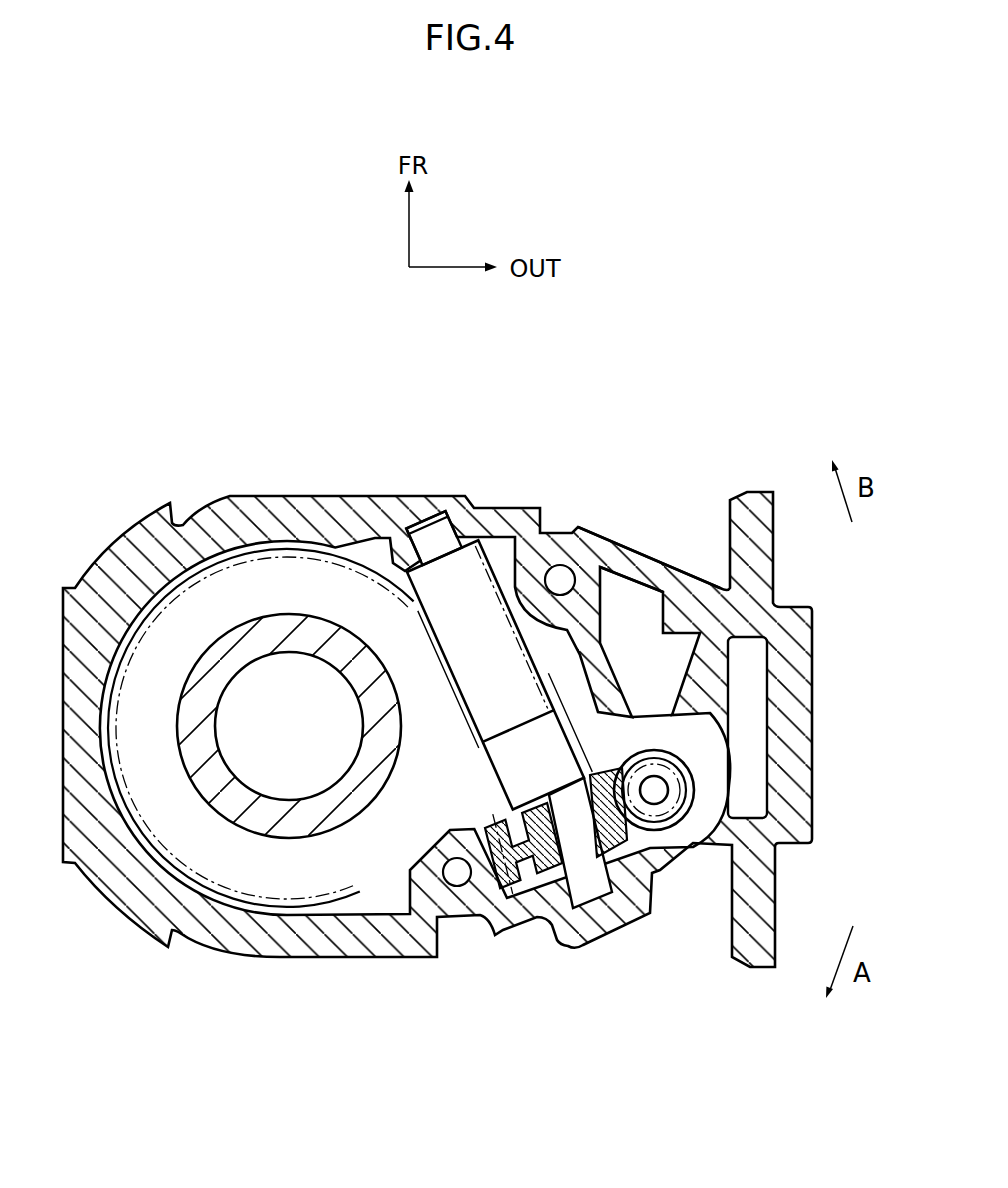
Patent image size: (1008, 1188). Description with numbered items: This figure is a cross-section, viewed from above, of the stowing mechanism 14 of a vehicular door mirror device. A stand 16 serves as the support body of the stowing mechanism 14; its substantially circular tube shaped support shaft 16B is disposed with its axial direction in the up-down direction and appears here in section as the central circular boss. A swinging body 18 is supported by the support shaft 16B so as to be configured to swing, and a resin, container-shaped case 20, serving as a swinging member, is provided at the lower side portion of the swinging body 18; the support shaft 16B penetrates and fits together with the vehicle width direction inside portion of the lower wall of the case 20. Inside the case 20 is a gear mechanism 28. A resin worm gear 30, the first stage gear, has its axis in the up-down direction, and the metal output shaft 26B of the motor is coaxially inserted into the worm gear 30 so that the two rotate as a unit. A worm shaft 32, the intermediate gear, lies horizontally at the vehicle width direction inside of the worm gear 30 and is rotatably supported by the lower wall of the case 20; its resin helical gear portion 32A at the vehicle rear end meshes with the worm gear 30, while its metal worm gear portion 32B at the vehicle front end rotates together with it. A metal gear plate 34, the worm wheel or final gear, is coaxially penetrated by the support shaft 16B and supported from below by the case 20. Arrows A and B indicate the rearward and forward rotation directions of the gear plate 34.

The stowing mechanism 14 is at (473, 682).
The stand 16 is at (289, 701).
The support shaft 16B is at (243, 618).
The swinging body 18 is at (650, 552).
The case 20 is at (338, 493).
The output shaft 26B is at (669, 790).
The gear mechanism 28 is at (535, 886).
The worm gear 30 is at (686, 766).
The worm shaft 32 is at (538, 768).
The helical gear portion 32A is at (502, 888).
The worm gear portion 32B is at (540, 665).
The gear plate 34 is at (284, 907).